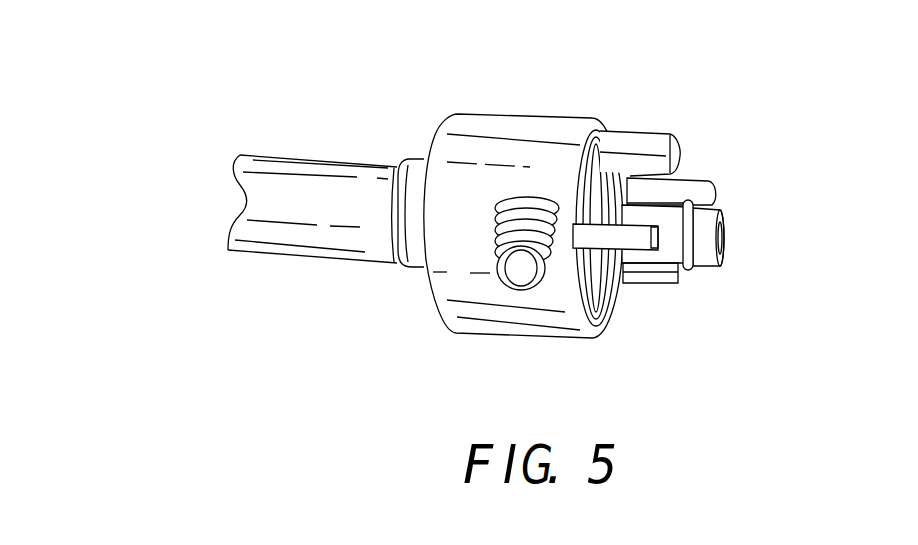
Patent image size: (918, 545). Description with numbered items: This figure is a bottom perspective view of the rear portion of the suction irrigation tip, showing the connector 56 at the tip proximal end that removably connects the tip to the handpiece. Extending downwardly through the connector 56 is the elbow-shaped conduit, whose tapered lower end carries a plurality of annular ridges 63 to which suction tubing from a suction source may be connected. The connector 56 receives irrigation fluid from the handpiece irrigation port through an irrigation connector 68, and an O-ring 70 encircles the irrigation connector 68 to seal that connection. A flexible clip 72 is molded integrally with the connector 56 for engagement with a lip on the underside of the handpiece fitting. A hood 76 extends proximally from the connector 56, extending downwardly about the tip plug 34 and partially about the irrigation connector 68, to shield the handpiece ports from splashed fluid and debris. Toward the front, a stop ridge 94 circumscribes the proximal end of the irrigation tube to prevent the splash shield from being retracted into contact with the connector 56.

The tip plug 34 is at (697, 187).
The connector 56 is at (541, 100).
The annular ridges 63 is at (492, 250).
The irrigation connector 68 is at (708, 268).
The O-ring 70 is at (704, 264).
The flexible clip 72 is at (642, 240).
The hood 76 is at (660, 137).
The stop ridge 94 is at (410, 158).